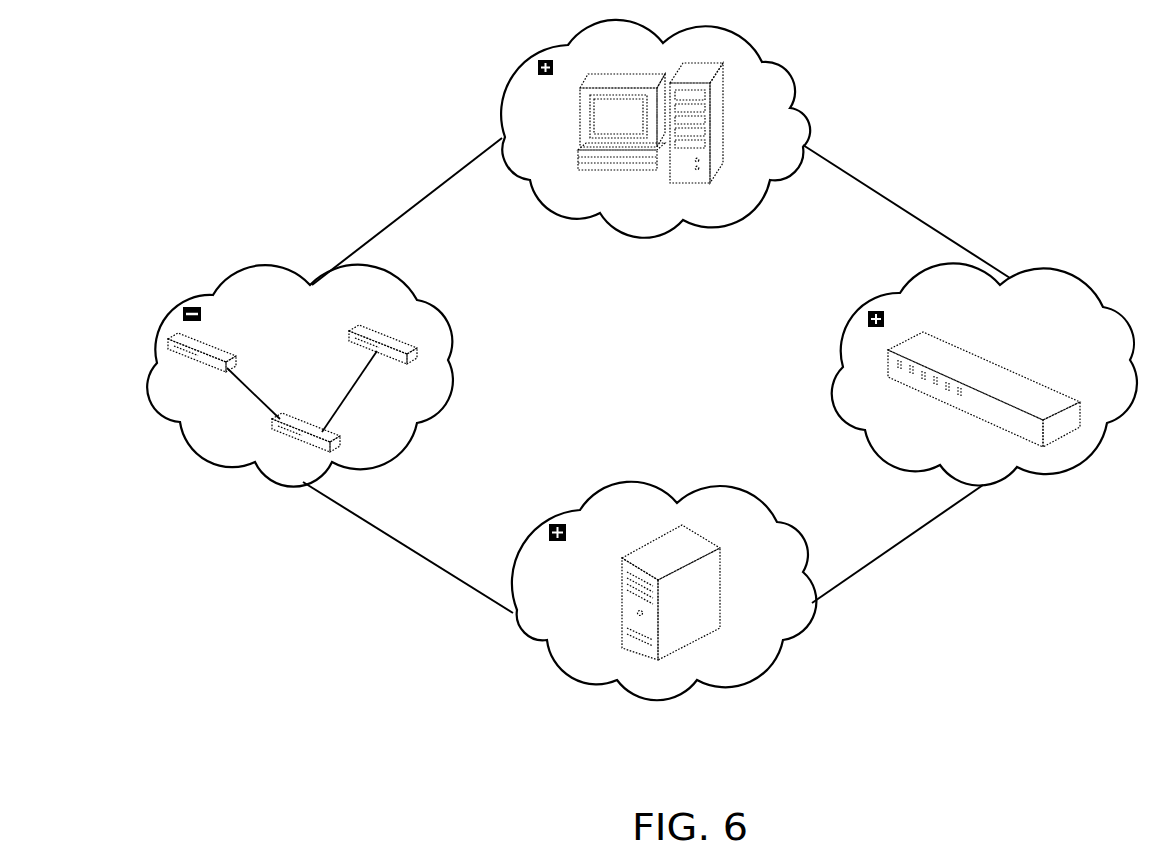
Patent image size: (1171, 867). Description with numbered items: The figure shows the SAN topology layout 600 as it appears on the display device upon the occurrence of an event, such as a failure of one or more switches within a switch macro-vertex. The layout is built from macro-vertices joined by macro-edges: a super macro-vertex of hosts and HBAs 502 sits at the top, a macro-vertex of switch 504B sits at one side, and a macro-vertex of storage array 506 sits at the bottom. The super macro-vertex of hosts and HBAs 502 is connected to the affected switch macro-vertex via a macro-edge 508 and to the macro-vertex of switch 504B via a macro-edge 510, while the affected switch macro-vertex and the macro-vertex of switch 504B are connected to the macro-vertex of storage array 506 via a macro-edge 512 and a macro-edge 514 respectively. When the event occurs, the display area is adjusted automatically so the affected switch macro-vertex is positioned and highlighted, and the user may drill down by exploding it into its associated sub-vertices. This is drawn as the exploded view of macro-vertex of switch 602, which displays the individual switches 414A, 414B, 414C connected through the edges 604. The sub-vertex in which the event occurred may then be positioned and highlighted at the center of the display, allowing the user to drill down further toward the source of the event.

The super macro-vertex of hosts and HBAs 502 is at (780, 75).
The macro-vertex of switch 504B is at (1075, 295).
The macro-vertex of storage array 506 is at (560, 650).
The macro-edge 508 is at (410, 205).
The macro-edge 510 is at (925, 215).
The macro-edge 512 is at (400, 545).
The macro-edge 514 is at (905, 545).
The exploded view of macro-vertex of switch 602 is at (458, 376).
The edges 604 is at (252, 385).
The switch 414A is at (207, 337).
The switch 414B is at (357, 325).
The switch 414C is at (317, 449).
The graph topology 600 is at (926, 688).